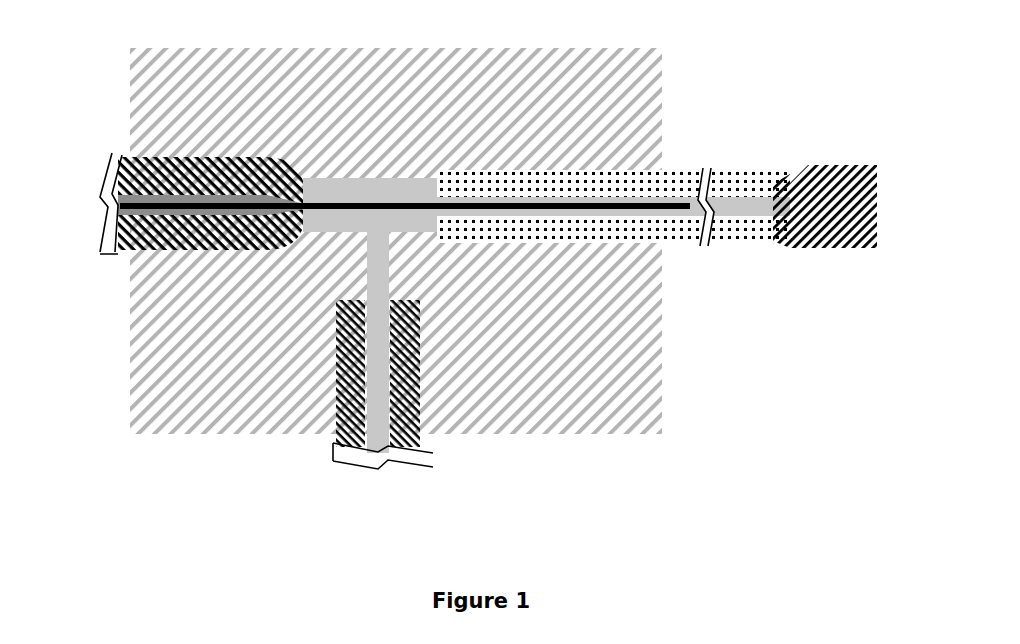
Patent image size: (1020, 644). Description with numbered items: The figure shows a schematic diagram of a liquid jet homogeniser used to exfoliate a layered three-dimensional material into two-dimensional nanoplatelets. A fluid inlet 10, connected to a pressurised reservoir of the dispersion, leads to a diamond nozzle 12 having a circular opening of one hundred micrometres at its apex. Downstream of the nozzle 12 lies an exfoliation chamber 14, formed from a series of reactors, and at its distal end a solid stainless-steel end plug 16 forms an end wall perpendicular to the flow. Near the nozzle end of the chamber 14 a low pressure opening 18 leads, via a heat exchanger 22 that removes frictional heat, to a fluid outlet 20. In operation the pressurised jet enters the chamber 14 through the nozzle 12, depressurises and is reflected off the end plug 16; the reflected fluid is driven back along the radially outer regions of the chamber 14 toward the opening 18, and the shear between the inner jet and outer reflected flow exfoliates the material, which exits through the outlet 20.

The fluid inlet 10 is at (118, 193).
The diamond nozzle 12 is at (318, 196).
The exfoliation chamber 14 is at (569, 168).
The end plug 16 is at (838, 187).
The low pressure opening 18 is at (387, 245).
The fluid outlet 20 is at (388, 461).
The heat exchanger 22 is at (427, 393).